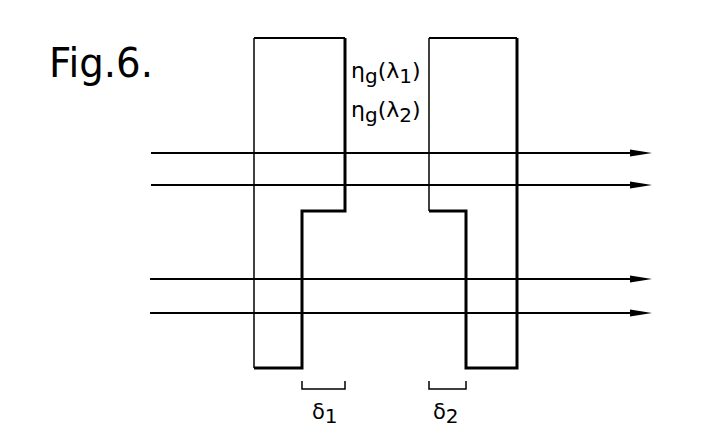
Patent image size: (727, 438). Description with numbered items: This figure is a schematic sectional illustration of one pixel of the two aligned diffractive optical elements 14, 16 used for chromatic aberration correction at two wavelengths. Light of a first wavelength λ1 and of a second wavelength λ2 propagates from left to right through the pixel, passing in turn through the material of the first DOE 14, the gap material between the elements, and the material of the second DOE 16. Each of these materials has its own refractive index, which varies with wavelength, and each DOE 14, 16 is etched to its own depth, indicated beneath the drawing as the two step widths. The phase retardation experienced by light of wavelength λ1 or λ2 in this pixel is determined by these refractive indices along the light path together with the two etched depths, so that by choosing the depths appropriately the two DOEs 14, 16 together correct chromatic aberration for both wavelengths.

The diffractive optical element 14 is at (265, 38).
The diffractive optical element 16 is at (463, 38).
The first wavelength beam (lambda 1) 1 is at (383, 280).
The second wavelength beam (lambda 2) 2 is at (383, 313).